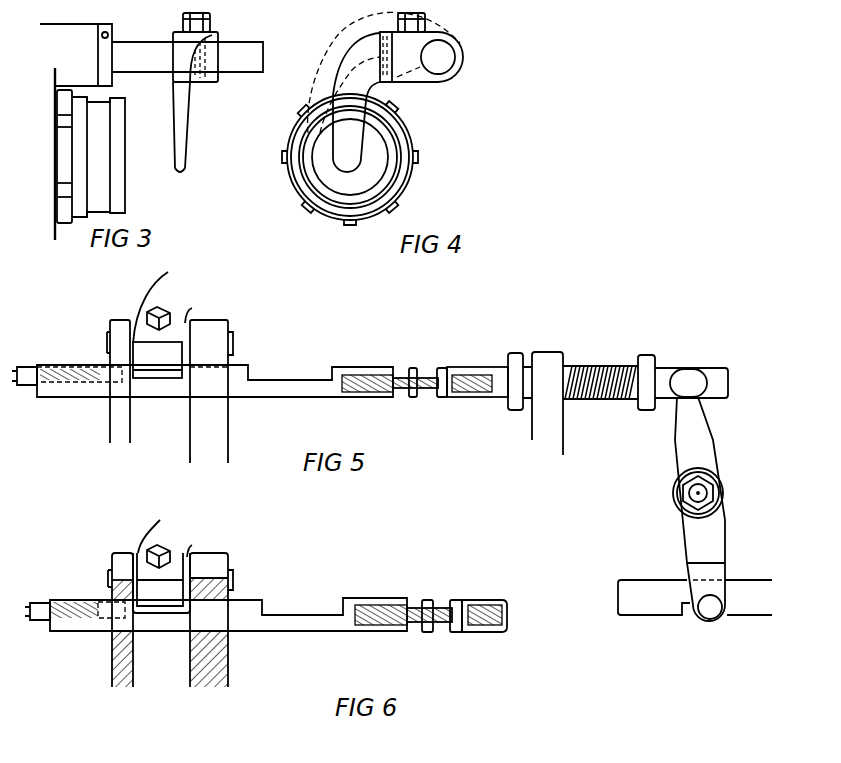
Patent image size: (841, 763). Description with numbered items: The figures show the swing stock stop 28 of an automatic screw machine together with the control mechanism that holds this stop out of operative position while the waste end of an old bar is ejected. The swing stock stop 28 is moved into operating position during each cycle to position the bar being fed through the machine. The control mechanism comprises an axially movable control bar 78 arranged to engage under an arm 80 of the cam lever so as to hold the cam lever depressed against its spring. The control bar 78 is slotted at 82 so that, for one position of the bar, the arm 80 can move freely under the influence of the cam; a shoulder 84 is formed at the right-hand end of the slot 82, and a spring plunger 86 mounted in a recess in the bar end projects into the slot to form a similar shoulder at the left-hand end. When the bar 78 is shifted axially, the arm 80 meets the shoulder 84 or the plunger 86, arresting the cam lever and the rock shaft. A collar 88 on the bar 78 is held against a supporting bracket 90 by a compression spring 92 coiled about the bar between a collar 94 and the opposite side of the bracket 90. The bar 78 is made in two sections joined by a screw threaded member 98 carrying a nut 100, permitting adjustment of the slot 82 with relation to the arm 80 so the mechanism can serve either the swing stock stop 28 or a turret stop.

In FIG. 3, the swing stock stop 28 is at (178, 138).
In FIG. 4, the swing stock stop 28 is at (353, 58).
In FIG. 5, the control bar 78 is at (343, 398).
In FIG. 6, the control bar 78 is at (238, 620).
In FIG. 5, the arm of the cam lever 80 is at (155, 360).
In FIG. 6, the slot 82 is at (143, 615).
In FIG. 5, the shoulder 84 is at (185, 372).
In FIG. 6, the shoulder 84 is at (193, 605).
In FIG. 5, the spring plunger 86 is at (103, 382).
In FIG. 6, the spring plunger 86 is at (125, 615).
In FIG. 5, the collar 88 is at (512, 353).
In FIG. 5, the supporting bracket 90 is at (538, 433).
In FIG. 5, the compression spring 92 is at (622, 400).
In FIG. 5, the collar 94 is at (645, 355).
In FIG. 5, the screw threaded member 98 is at (425, 397).
In FIG. 5, the nut 100 is at (413, 368).
In FIG. 6, the nut 100 is at (425, 600).